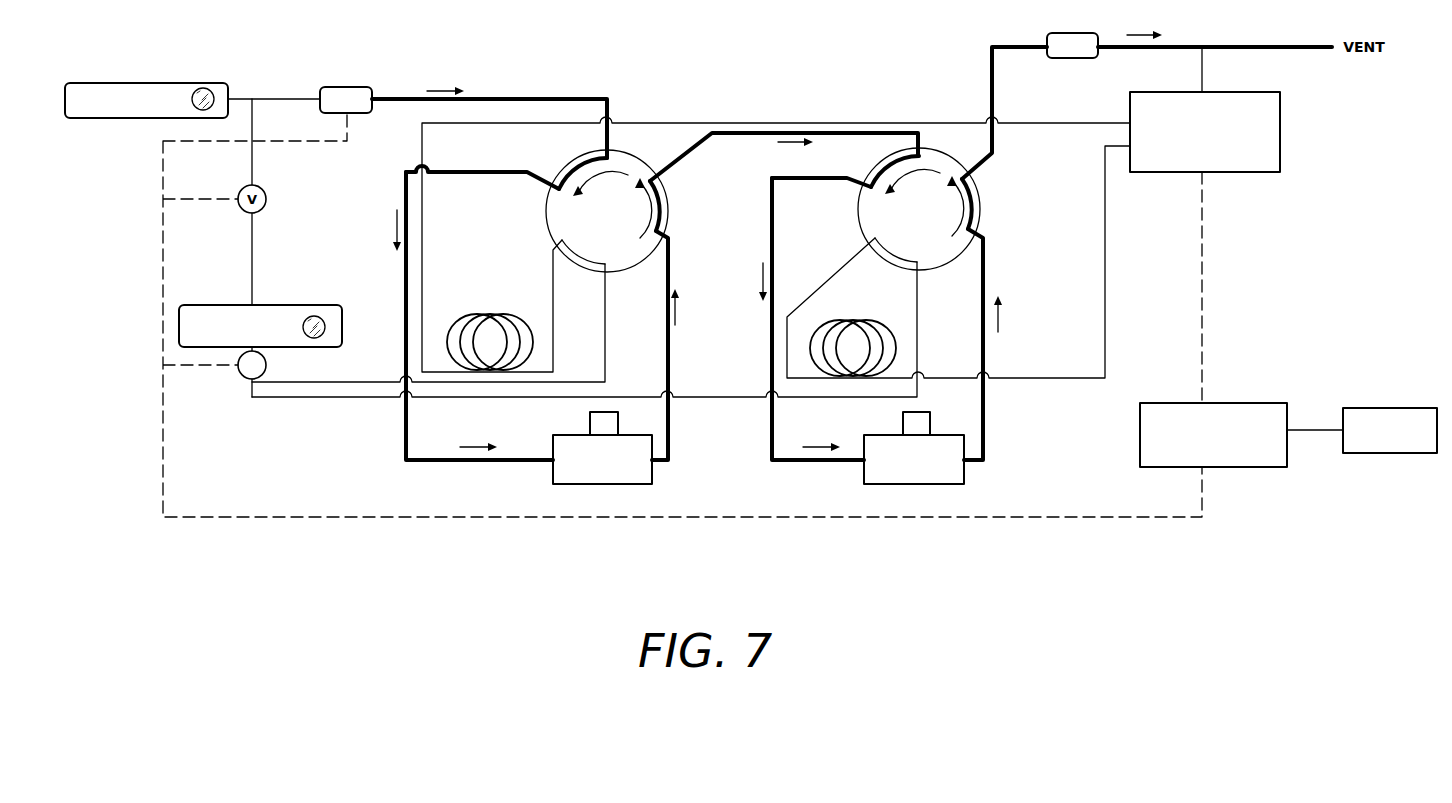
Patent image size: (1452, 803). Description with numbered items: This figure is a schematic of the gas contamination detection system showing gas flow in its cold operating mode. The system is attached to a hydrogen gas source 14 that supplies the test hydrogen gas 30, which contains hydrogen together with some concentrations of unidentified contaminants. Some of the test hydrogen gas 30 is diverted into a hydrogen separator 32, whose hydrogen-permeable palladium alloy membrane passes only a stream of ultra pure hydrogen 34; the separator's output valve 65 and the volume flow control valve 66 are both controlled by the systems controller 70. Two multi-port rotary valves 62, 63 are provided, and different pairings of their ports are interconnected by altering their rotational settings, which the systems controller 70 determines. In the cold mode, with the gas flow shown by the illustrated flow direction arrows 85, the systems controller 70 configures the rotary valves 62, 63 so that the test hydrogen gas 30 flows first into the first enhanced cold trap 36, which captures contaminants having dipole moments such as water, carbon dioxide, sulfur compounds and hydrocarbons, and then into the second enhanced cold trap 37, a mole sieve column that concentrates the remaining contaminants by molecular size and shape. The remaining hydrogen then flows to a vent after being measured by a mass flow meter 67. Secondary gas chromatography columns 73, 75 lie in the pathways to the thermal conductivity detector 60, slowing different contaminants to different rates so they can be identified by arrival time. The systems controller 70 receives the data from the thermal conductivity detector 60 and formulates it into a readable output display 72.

The hydrogen gas source 14 is at (114, 118).
The test hydrogen gas 30 is at (212, 92).
The volume flow control valve 66 is at (357, 87).
The hydrogen separator 32 is at (237, 304).
The ultra pure hydrogen 34 is at (315, 316).
The output valve 65 is at (245, 377).
The rotary valve 62 is at (668, 205).
The rotary valve 63 is at (982, 213).
The secondary gas chromatography column 73 is at (463, 313).
The secondary gas chromatography column 75 is at (886, 323).
The flow direction arrows 85 is at (760, 282).
The first enhanced cold trap 36 is at (652, 472).
The second enhanced cold trap 37 is at (964, 472).
The mass flow meter 67 is at (1080, 59).
The thermal conductivity detector 60 is at (1235, 173).
The systems controller 70 is at (1228, 403).
The output display 72 is at (1367, 408).